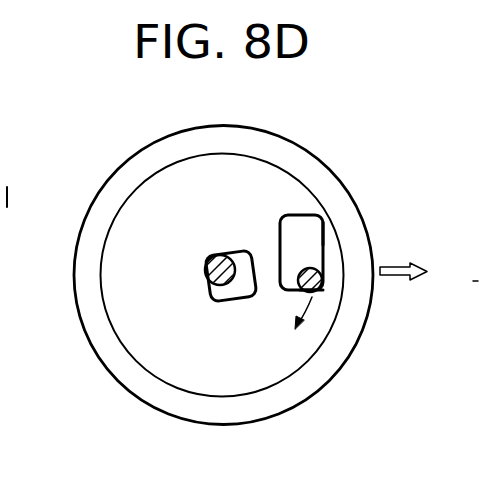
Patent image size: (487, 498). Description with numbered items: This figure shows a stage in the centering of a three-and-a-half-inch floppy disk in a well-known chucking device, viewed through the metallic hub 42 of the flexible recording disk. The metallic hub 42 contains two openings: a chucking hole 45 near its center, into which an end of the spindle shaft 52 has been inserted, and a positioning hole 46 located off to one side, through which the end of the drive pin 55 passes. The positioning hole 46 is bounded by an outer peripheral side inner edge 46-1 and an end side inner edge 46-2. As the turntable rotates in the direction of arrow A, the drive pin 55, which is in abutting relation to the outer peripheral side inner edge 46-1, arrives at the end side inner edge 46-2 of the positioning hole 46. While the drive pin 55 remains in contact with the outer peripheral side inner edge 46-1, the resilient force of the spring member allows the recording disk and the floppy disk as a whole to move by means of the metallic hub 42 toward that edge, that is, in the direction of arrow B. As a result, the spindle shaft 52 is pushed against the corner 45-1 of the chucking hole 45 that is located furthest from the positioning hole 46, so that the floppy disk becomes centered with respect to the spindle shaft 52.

The metallic hub 42 is at (308, 360).
The chucking hole 45 is at (214, 246).
The corner of the chucking hole 45-1 is at (205, 263).
The spindle shaft 52 is at (208, 279).
The positioning hole 46 is at (297, 210).
The outer peripheral side inner edge 46-1 is at (325, 232).
The end side inner edge 46-2 is at (322, 289).
The drive pin 55 is at (320, 271).
The arrow A is at (300, 310).
The arrow B is at (404, 262).